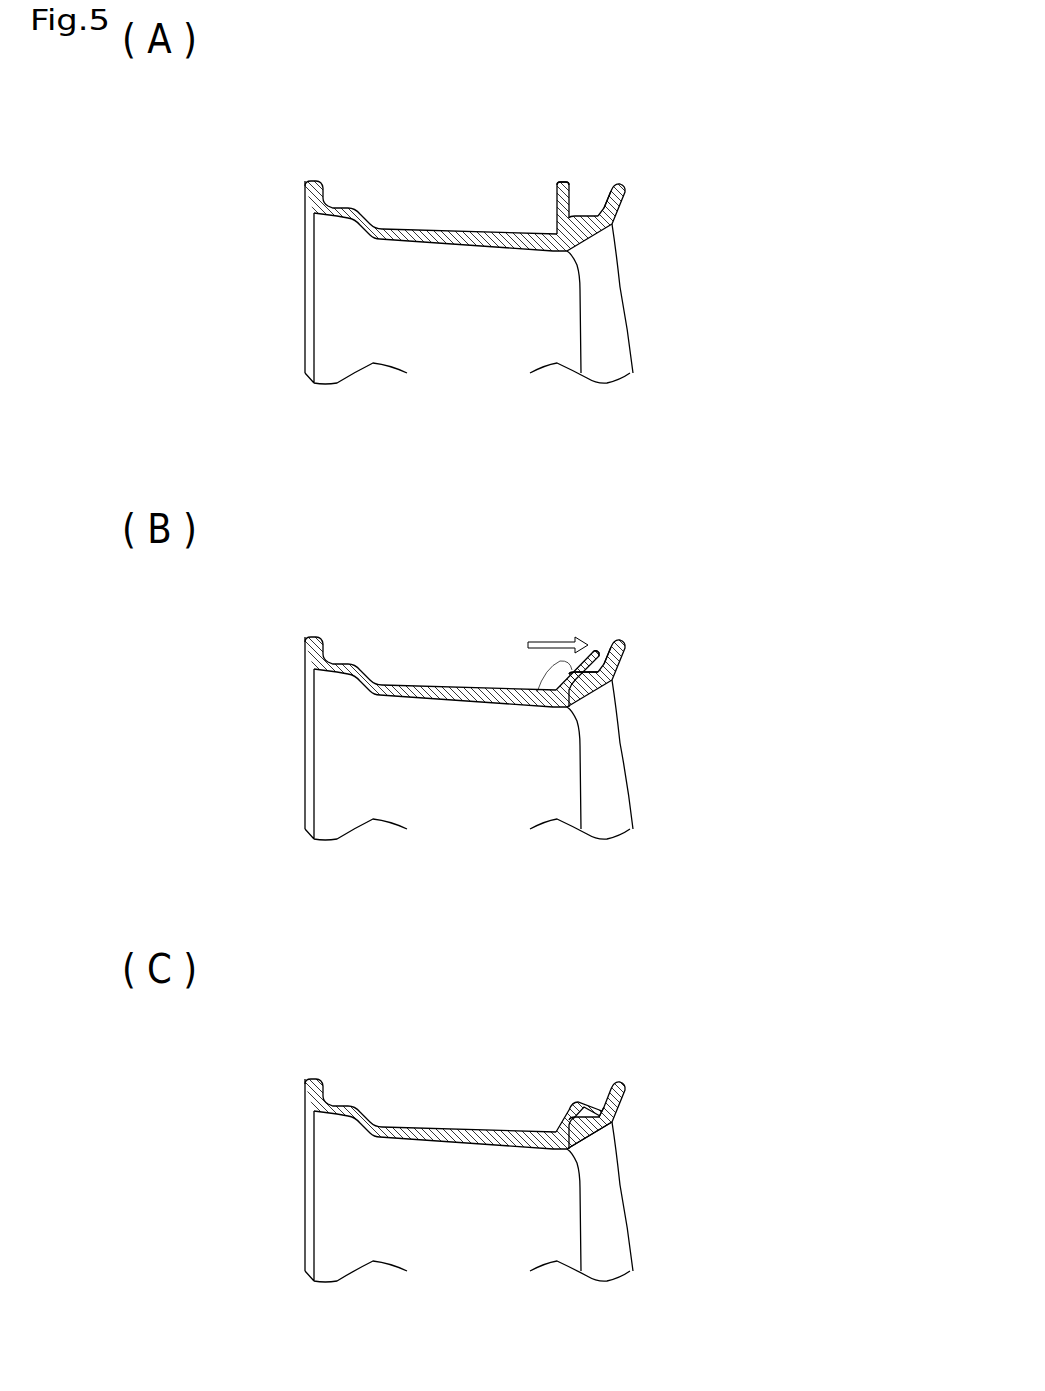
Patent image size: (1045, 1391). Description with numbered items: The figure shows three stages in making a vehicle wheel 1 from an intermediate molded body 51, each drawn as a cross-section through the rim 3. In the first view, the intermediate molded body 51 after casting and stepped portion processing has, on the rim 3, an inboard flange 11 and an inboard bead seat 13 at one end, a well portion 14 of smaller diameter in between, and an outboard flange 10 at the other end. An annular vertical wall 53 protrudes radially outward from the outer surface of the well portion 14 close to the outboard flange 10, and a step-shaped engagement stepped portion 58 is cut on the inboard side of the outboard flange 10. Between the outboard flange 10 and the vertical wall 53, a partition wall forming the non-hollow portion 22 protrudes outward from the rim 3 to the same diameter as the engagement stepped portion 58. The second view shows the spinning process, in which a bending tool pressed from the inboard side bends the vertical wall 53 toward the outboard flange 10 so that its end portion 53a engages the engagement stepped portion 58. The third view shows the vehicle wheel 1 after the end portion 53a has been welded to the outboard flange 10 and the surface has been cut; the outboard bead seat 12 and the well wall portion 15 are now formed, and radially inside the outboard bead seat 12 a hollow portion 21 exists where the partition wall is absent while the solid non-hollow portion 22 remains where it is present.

The vehicle wheel 1 is at (696, 1275).
The rim 3 is at (416, 228).
The outboard flange 10 is at (626, 188).
The inboard flange 11 is at (305, 193).
The outboard bead seat 12 is at (600, 1103).
The inboard bead seat 13 is at (332, 203).
The well portion 14 is at (508, 248).
The well wall portion 15 is at (568, 1106).
The hollow portion 21 is at (595, 690).
The non-hollow portion 22 is at (564, 251).
The intermediate molded body 51 is at (686, 292).
The vertical wall 53 is at (557, 200).
The end portion 53a is at (567, 183).
The engagement stepped portion 58 is at (603, 200).